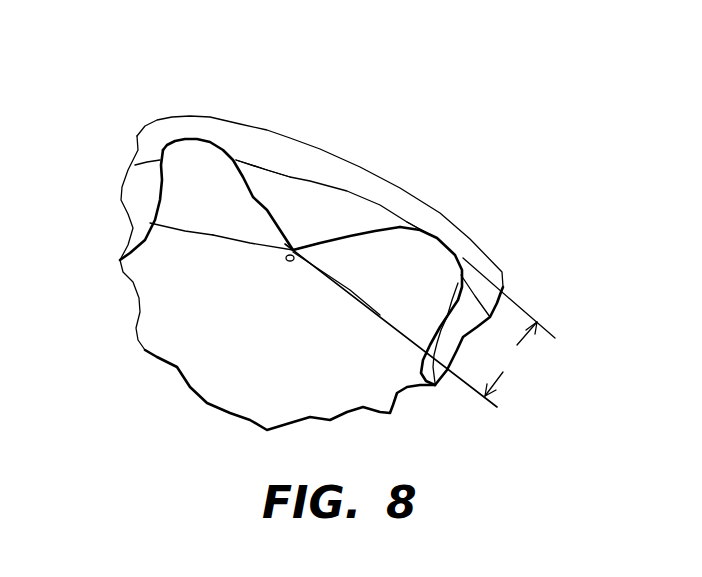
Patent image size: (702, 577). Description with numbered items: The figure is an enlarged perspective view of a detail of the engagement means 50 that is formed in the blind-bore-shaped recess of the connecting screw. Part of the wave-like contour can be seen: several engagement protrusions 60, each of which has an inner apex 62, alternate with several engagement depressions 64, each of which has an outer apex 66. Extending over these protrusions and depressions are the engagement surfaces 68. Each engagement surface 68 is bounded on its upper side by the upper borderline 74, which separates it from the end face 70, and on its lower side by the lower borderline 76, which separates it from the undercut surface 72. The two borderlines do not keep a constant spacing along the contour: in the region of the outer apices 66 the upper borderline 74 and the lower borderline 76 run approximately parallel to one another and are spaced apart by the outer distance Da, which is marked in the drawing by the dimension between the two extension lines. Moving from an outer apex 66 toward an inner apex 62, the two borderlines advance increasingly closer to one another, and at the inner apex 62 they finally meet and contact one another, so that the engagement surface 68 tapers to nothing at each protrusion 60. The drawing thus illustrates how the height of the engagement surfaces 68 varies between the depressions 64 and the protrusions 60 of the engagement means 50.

The engagement means 50 is at (496, 241).
The engagement protrusions 60 is at (280, 189).
The inner apex 62 is at (333, 169).
The engagement depressions 64 is at (210, 164).
The outer apex 66 is at (180, 141).
The engagement surfaces 68 is at (398, 247).
The end face 70 is at (338, 217).
The undercut surface 72 is at (279, 297).
The upper borderline 74 is at (416, 195).
The lower borderline 76 is at (138, 267).